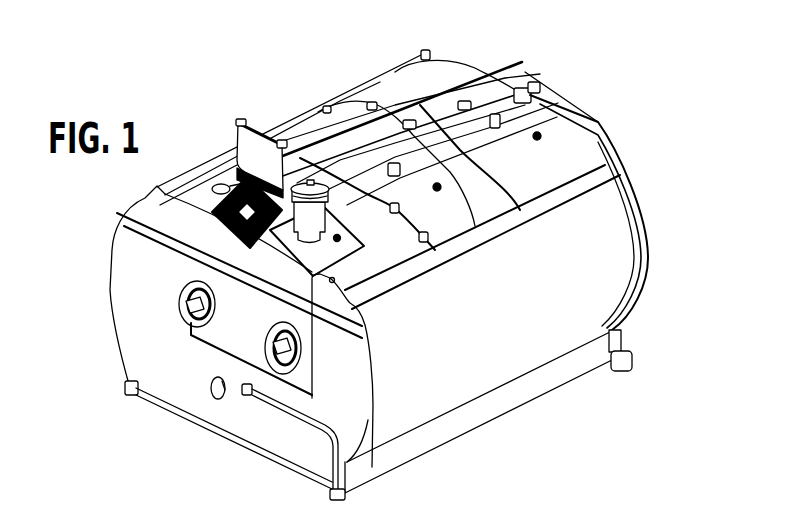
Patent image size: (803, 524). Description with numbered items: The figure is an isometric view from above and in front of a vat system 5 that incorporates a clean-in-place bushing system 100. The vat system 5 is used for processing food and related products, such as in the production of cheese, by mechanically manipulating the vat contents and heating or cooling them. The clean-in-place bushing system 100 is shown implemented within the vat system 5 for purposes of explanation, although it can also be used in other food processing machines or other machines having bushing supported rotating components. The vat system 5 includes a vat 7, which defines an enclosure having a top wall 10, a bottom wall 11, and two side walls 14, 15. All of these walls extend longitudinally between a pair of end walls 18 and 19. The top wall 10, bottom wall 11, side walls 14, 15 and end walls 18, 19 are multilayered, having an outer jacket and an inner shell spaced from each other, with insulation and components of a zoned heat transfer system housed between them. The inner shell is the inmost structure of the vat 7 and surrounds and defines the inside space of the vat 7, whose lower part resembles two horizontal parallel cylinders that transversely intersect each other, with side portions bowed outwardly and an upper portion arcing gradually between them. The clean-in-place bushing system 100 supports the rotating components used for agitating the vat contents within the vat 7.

The vat system 5 is at (113, 242).
The vat 7 is at (589, 306).
The top wall 10 is at (467, 75).
The bottom wall 11 is at (233, 440).
The side wall 14 is at (112, 258).
The side wall 15 is at (610, 253).
The end wall 18 is at (130, 290).
The end wall 19 is at (643, 208).
The clean-in-place bushing system 100 is at (193, 284).